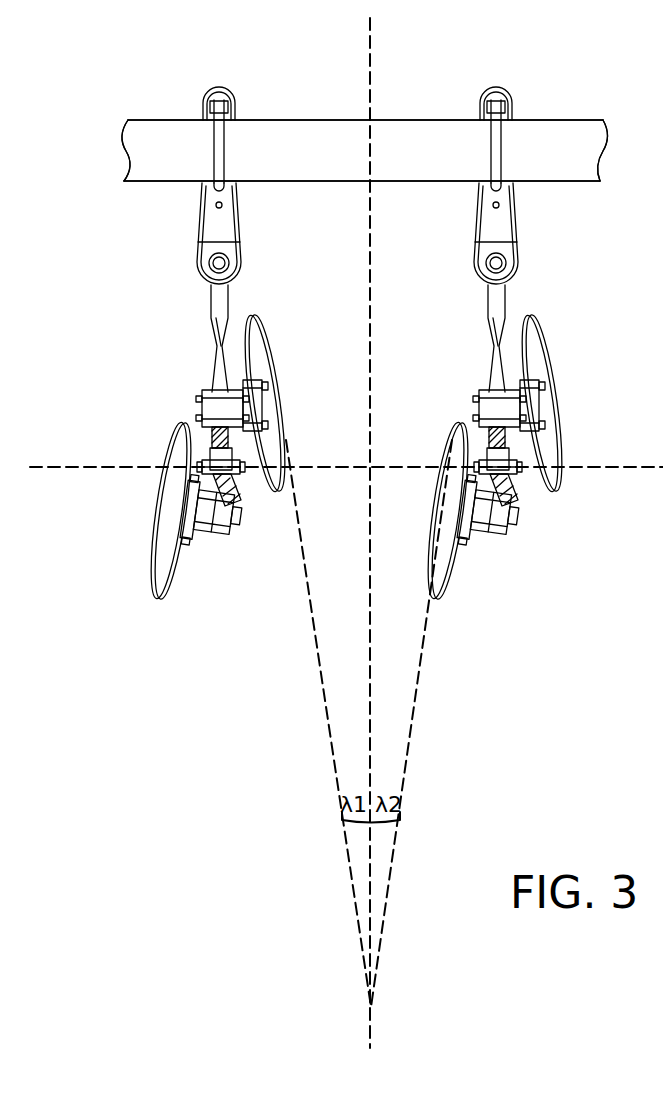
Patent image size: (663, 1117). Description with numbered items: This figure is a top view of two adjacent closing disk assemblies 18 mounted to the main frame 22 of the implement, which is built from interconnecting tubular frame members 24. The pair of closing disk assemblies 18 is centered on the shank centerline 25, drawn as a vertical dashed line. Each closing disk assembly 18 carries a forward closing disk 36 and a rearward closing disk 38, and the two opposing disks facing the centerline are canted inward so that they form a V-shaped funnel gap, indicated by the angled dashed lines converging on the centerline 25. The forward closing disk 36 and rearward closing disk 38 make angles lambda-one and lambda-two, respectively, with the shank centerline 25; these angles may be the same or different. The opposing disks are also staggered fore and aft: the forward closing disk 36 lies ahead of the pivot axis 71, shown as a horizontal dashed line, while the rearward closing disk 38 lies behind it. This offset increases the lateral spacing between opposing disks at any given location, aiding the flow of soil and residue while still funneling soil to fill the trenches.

The closing disk assembly 18 is at (96, 523).
The main frame 22 is at (303, 120).
The tubular frame member 24 is at (547, 130).
The shank centerline 25 is at (371, 68).
The forward closing disk 36 is at (259, 347).
The rearward closing disk 38 is at (170, 575).
The pivot axis 71 is at (115, 466).